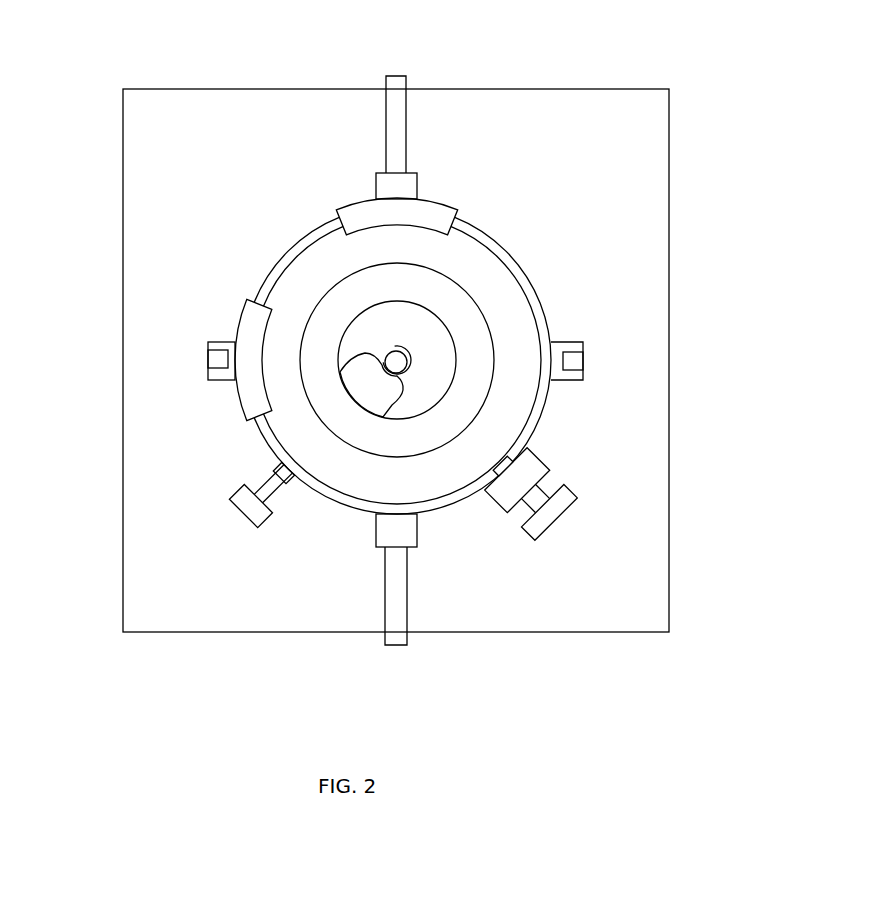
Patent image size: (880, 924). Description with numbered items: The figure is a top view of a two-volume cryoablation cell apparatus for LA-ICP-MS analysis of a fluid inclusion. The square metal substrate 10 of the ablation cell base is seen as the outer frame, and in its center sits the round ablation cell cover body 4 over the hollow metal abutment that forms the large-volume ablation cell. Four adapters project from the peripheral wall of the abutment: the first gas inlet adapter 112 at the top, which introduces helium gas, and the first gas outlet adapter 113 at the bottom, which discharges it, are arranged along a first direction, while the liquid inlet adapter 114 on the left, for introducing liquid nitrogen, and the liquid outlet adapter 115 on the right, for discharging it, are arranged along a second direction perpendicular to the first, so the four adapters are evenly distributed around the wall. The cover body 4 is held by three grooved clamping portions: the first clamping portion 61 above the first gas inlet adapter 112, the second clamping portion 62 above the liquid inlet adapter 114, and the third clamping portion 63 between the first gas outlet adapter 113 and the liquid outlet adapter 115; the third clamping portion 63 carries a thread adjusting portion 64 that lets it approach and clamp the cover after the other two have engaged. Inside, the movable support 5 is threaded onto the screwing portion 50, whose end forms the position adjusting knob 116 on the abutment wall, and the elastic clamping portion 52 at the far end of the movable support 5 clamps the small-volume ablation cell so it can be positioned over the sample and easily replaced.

The ablation cell cover body 4 is at (464, 262).
The movable support 5 is at (368, 407).
The metal substrate 10 is at (590, 247).
The screwing portion 50 is at (279, 468).
The elastic clamping portion 52 is at (393, 345).
The first clamping portion 61 is at (358, 216).
The second clamping portion 62 is at (258, 327).
The third clamping portion 63 is at (530, 470).
The thread adjusting portion 64 is at (558, 510).
The first gas inlet adapter 112 is at (402, 85).
The first gas outlet adapter 113 is at (400, 608).
The liquid inlet adapter 114 is at (208, 356).
The liquid outlet adapter 115 is at (563, 340).
The position adjusting knob 116 is at (250, 505).